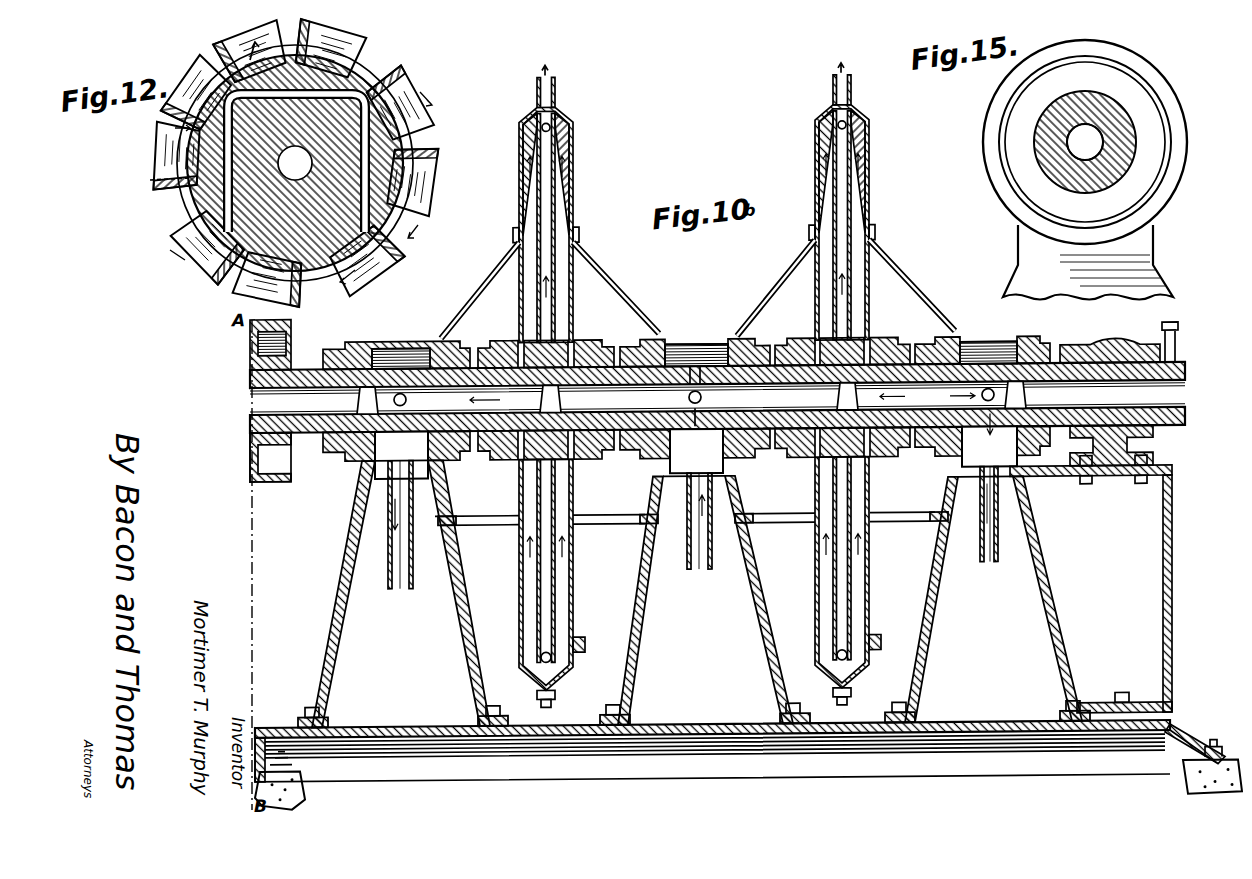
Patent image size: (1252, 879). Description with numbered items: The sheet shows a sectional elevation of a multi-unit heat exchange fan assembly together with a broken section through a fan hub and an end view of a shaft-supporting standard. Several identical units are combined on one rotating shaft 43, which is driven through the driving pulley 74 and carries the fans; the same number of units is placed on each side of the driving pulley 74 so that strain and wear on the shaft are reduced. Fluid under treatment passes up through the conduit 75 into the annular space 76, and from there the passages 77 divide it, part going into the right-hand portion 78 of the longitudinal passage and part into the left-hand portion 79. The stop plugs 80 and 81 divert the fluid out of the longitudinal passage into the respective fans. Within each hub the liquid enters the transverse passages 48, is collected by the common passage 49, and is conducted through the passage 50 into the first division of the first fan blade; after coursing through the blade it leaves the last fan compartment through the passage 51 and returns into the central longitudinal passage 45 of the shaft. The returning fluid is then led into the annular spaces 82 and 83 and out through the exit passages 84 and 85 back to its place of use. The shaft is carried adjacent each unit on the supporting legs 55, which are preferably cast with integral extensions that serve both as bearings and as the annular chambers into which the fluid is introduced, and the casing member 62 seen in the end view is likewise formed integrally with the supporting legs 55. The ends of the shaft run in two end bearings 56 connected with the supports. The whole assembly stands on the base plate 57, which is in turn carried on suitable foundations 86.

In FIG. 15, the rotating shaft 43 is at (1112, 115).
In FIG. 10B, the rotating shaft 43 is at (1185, 372).
In FIG. 12, the passage 45 is at (295, 163).
In FIG. 15, the passage 45 is at (1085, 142).
In FIG. 10B, the passage 45 is at (1165, 400).
In FIG. 12, the transverse passages 48 is at (375, 138).
In FIG. 12, the common passage 49 is at (300, 100).
In FIG. 12, the passage 50 is at (258, 95).
In FIG. 12, the passage 51 is at (156, 180).
In FIG. 15, the supporting legs 55 is at (1150, 272).
In FIG. 10B, the supporting legs 55 is at (330, 650).
In FIG. 10B, the end bearings 56 is at (1112, 475).
In FIG. 10B, the base plate 57 is at (405, 722).
In FIG. 15, the casing member 62 is at (1180, 148).
In FIG. 10B, the driving pulley 74 is at (282, 482).
In FIG. 10B, the conduit 75 is at (700, 578).
In FIG. 10B, the annular space 76 is at (672, 470).
In FIG. 10B, the passages 77 is at (697, 400).
In FIG. 10B, the right-hand portion of the longitudinal passage 78 is at (805, 368).
In FIG. 10B, the left-hand portion of the longitudinal passage 79 is at (692, 372).
In FIG. 10B, the stop plug 80 is at (825, 470).
In FIG. 10B, the stop plug 81 is at (525, 470).
In FIG. 10B, the annular space 82 is at (395, 345).
In FIG. 10B, the annular space 83 is at (988, 345).
In FIG. 10B, the exit passage 84 is at (408, 582).
In FIG. 10B, the exit passage 85 is at (990, 578).
In FIG. 10B, the foundations 86 is at (305, 800).